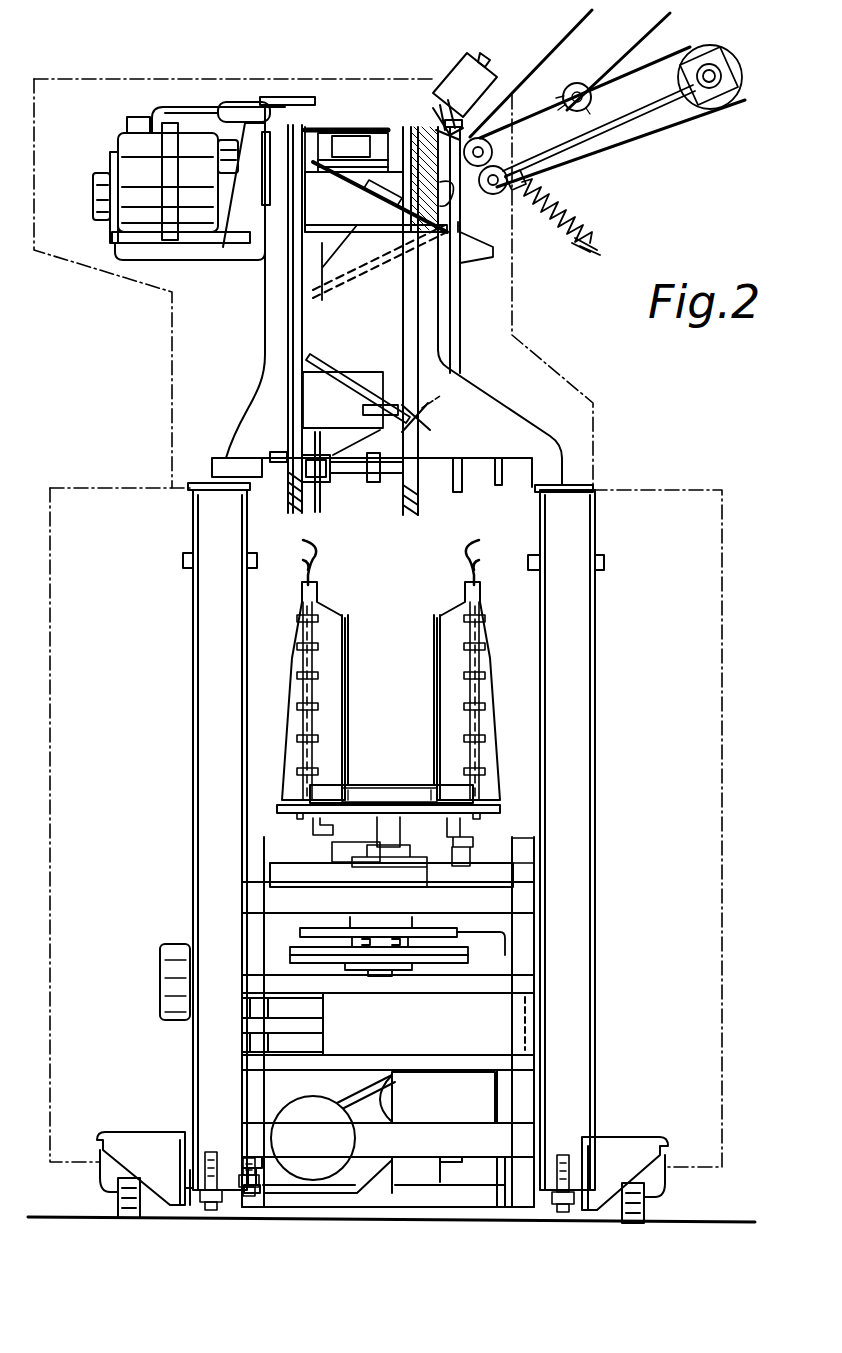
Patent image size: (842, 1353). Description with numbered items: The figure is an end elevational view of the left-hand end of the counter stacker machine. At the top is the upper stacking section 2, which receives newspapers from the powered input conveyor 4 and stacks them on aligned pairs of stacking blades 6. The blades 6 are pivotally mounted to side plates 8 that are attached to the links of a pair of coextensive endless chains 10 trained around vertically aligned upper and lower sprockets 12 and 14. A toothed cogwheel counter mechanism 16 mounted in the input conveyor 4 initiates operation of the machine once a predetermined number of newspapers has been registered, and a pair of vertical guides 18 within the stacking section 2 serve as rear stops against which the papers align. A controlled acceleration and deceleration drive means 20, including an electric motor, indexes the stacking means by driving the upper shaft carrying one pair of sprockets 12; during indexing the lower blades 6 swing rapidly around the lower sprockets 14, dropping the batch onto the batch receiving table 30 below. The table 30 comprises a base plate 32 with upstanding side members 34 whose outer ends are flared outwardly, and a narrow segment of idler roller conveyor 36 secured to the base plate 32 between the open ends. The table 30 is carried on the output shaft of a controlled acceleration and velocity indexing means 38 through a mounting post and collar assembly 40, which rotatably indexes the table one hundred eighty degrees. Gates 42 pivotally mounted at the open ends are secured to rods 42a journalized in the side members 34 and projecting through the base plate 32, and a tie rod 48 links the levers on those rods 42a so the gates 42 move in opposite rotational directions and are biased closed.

The upper stacking section 2 is at (493, 342).
The input conveyor 4 is at (589, 176).
The stacking blades 6 is at (311, 158).
The side plates 8 is at (336, 208).
The endless chains 10 is at (383, 300).
The upper sprockets 12 is at (350, 128).
The lower sprockets 14 is at (328, 485).
The toothed cogwheel counter mechanism 16 is at (567, 83).
The vertical guides 18 is at (318, 322).
The controlled acceleration and deceleration drive means 20 is at (120, 140).
The batch receiving table 30 is at (393, 757).
The base plate 32 is at (503, 812).
The side members 34 is at (380, 557).
The idler roller conveyor 36 is at (404, 787).
The controlled acceleration and velocity indexing means 38 is at (497, 880).
The mounting post and collar assembly 40 is at (403, 847).
The gates 42 is at (442, 628).
The rods 42a is at (297, 690).
The tie rod 48 is at (350, 815).